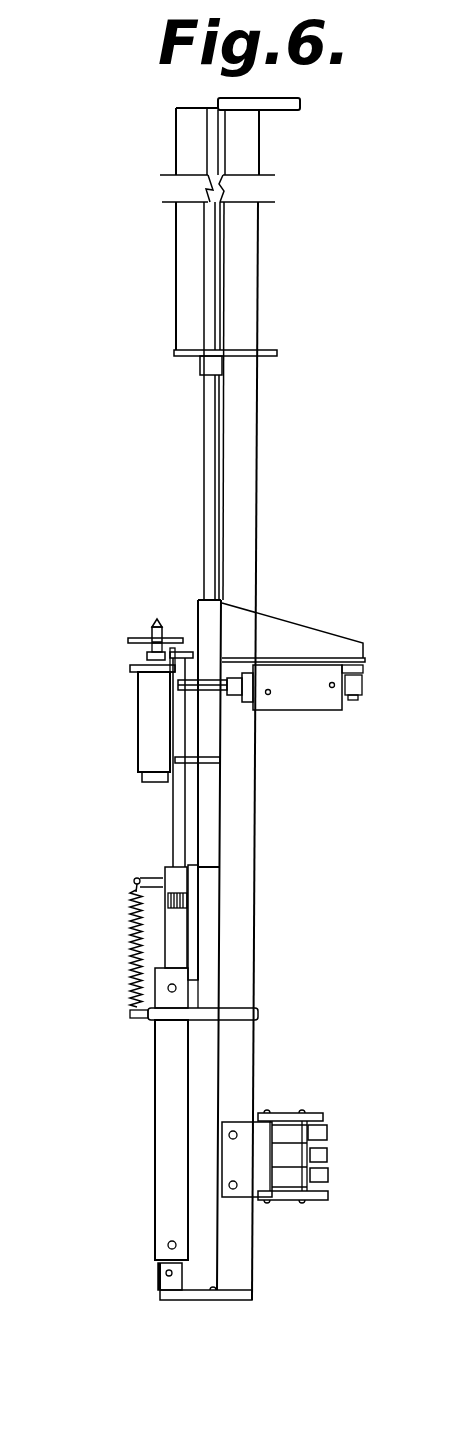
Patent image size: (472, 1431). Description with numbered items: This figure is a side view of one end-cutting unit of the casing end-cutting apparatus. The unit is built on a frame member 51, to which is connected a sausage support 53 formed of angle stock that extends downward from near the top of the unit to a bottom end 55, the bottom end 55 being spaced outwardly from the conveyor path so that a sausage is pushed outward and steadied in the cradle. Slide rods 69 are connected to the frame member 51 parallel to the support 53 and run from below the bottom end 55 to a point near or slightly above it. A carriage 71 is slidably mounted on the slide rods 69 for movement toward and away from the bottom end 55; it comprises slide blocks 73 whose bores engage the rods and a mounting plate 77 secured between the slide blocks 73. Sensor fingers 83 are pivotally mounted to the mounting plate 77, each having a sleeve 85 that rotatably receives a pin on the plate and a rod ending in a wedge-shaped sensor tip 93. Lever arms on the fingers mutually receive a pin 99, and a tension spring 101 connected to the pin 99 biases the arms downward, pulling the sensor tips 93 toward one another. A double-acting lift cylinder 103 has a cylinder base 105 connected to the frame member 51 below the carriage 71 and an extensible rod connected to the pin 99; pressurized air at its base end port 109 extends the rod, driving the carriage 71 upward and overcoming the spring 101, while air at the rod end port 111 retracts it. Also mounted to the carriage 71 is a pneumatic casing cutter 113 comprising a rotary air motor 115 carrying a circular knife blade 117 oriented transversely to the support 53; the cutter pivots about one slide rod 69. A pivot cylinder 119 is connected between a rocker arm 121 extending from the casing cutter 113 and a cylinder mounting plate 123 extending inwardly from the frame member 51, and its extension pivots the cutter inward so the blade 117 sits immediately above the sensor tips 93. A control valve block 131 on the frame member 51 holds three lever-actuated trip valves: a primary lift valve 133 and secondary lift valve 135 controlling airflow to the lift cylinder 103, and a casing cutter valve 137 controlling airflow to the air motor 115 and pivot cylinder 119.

The frame member 51 is at (258, 268).
The sausage support 53 is at (176, 258).
The bottom end 55 is at (186, 358).
The slide rods 69 is at (204, 461).
The carriage 71 is at (222, 808).
The slide blocks 73 is at (220, 890).
The mounting plate 77 is at (200, 938).
The sensor fingers 83 is at (172, 814).
The sleeve 85 is at (166, 868).
The sensor tip 93 is at (193, 645).
The pin 99 is at (134, 882).
The tension spring 101 is at (128, 940).
The lift cylinder 103 is at (155, 1103).
The cylinder base 105 is at (155, 1243).
The base end port 109 is at (178, 1245).
The rod end port 111 is at (177, 988).
The casing cutter 113 is at (111, 755).
The rotary air motor 115 is at (138, 726).
The circular knife blade 117 is at (128, 640).
The pivot cylinder 119 is at (325, 712).
The rocker arm 121 is at (187, 693).
The cylinder mounting plate 123 is at (298, 628).
The control valve block 131 is at (285, 1112).
The primary lift valve 133 is at (330, 1176).
The secondary lift valve 135 is at (328, 1132).
The casing cutter valve 137 is at (329, 1155).